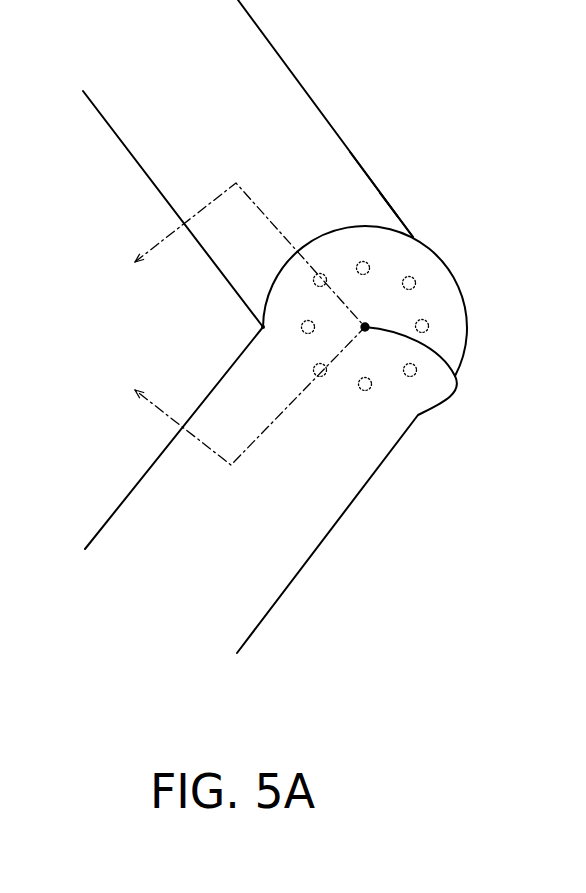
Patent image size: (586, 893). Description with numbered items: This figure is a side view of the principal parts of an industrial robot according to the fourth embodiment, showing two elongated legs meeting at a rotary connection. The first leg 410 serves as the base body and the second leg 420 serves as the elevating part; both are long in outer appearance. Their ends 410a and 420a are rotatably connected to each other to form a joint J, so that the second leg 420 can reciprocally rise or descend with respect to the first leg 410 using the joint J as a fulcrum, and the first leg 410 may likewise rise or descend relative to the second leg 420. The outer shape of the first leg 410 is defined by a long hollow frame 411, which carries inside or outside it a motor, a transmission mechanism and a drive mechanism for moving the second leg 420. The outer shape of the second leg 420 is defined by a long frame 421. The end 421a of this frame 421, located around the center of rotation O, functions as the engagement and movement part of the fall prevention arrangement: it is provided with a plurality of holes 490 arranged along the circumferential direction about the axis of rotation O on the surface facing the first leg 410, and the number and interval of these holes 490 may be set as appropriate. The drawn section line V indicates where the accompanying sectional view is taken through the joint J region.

The second arm portion 410 is at (306, 546).
The circular head portion of second arm 410a is at (455, 290).
The lower edge of first arm 411 is at (136, 486).
The upper edge of second arm 420 is at (296, 91).
The edge portion of second arm 420a is at (372, 195).
The upper edge of first arm 421 is at (123, 133).
The edge portion of first arm 421a is at (386, 202).
The holes 490 is at (408, 374).
The rotation center O is at (455, 376).
The joint point J is at (233, 323).
The section line V- V is at (237, 324).